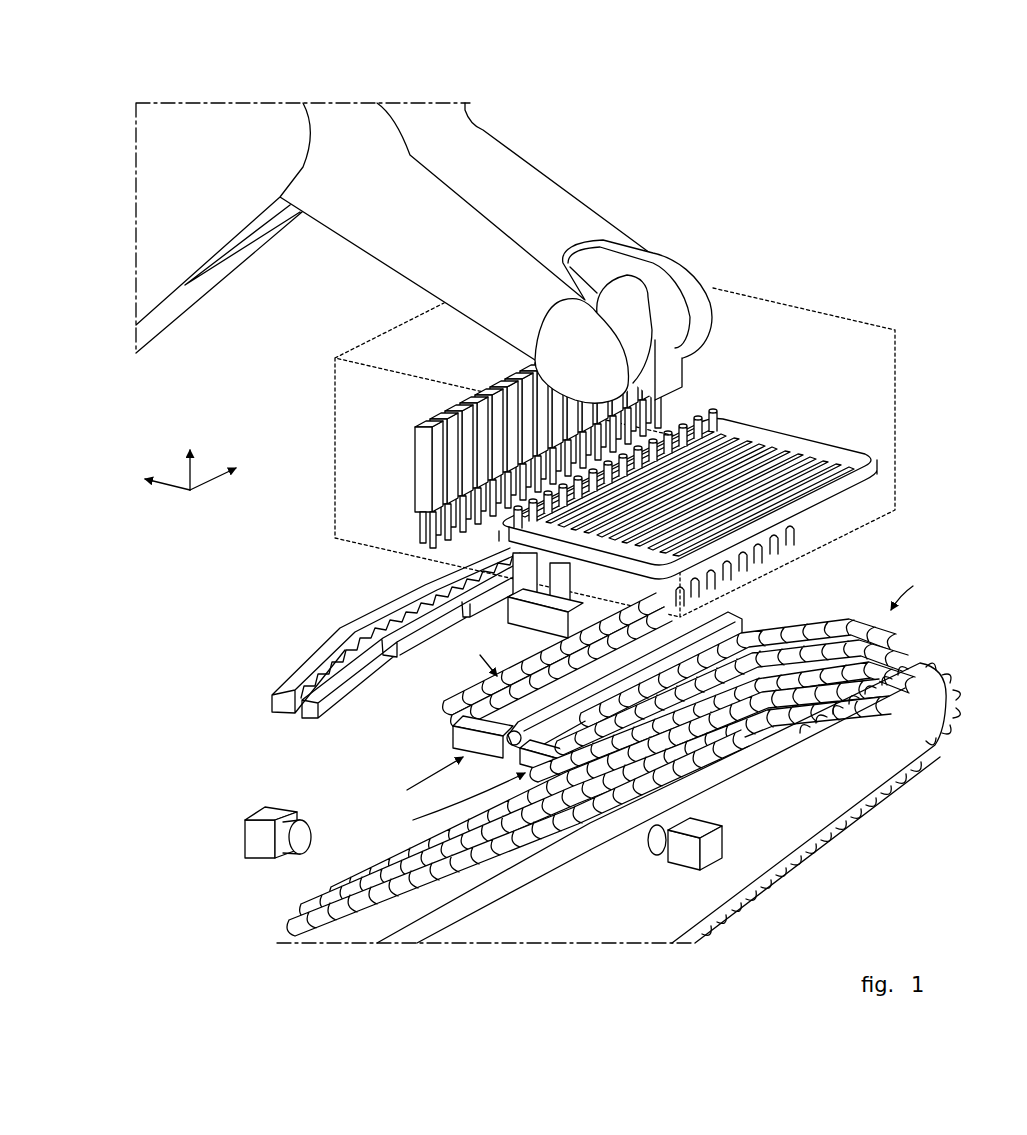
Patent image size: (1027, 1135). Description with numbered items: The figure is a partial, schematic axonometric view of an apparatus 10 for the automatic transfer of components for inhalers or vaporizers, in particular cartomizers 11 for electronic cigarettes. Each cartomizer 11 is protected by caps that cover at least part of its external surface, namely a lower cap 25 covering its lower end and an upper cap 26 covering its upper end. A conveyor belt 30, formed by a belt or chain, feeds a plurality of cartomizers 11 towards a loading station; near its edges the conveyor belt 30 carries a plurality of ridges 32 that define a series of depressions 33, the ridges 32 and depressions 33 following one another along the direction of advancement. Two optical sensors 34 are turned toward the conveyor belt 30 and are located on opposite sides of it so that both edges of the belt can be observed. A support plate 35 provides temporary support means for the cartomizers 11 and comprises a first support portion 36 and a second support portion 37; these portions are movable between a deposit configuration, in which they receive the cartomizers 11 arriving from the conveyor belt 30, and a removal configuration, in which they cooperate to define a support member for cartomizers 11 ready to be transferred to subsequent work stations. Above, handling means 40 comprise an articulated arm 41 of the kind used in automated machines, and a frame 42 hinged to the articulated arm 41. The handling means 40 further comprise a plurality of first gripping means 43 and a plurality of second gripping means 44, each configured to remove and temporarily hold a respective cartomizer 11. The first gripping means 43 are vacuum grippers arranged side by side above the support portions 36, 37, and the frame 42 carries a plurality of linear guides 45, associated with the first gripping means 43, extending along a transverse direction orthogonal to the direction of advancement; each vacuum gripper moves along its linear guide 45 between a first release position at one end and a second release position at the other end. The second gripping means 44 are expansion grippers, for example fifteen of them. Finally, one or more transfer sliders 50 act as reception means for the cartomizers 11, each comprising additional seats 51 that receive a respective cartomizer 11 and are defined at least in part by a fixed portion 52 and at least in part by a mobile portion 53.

The apparatus 10 is at (570, 551).
The cartomizer 11 is at (557, 661).
The lower cap 25 is at (356, 929).
The upper cap 26 is at (310, 917).
The conveyor belt 30 is at (609, 699).
The ridge 32 is at (558, 825).
The depression 33 is at (612, 808).
The optical sensor 34 is at (253, 834).
The support plate 35 is at (758, 610).
The first support portion 36 is at (468, 740).
The second support portion 37 is at (535, 758).
The handling means 40 is at (424, 325).
The articulated arm 41 is at (357, 223).
The frame 42 is at (803, 330).
The first gripping means 43 is at (715, 489).
The second gripping means 44 is at (376, 440).
The linear guide 45 is at (832, 460).
The transfer slider 50 is at (392, 653).
The additional seat 51 is at (313, 676).
The fixed portion 52 is at (284, 706).
The mobile portion 53 is at (348, 681).